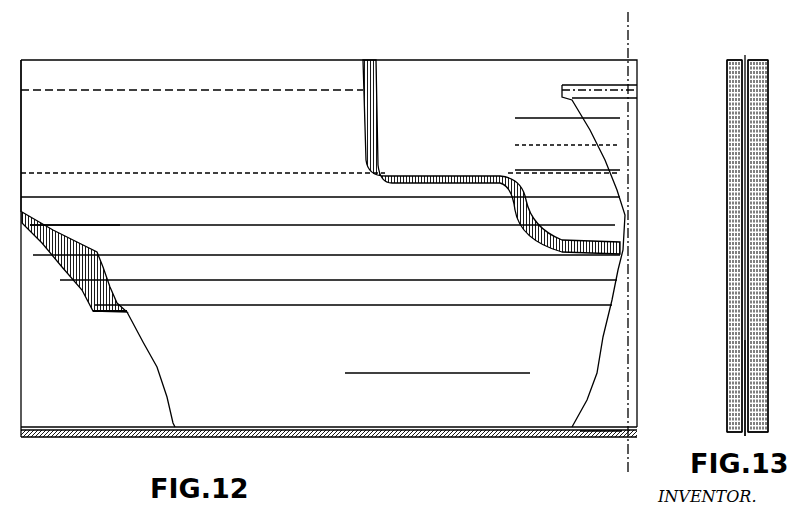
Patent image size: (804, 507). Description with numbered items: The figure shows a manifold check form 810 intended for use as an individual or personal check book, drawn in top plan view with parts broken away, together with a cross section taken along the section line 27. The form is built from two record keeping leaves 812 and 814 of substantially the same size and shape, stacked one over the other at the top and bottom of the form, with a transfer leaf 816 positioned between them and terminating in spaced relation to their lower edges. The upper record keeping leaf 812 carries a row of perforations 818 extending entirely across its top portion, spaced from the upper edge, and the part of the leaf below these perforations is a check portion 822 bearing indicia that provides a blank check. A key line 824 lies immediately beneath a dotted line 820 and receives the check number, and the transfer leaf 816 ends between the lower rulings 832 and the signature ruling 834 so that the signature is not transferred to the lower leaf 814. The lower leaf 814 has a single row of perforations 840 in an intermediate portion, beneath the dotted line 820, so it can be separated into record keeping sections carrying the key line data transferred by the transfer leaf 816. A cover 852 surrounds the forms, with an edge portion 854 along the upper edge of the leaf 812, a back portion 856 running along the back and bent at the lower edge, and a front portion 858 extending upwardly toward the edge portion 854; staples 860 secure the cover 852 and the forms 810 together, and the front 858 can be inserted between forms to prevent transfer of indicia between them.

In FIG. 12, the section line 27 is at (627, 25).
In FIG. 12, the manifold check form 810 is at (432, 447).
In FIG. 13, the manifold check form 810 is at (723, 209).
In FIG. 12, the record keeping leaf 812 is at (173, 383).
In FIG. 13, the record keeping leaf 812 is at (727, 240).
In FIG. 12, the record keeping leaf 814 is at (487, 38).
In FIG. 13, the record keeping leaf 814 is at (730, 263).
In FIG. 12, the transfer leaf 816 is at (364, 104).
In FIG. 13, the transfer leaf 816 is at (728, 293).
In FIG. 12, the row of perforations 818 is at (138, 90).
In FIG. 12, the dotted line 820 is at (36, 170).
In FIG. 12, the check portion of leaf 822 is at (397, 418).
In FIG. 12, the key line 824 is at (46, 200).
In FIG. 12, the lower rulings 832 is at (212, 280).
In FIG. 12, the ruling 834 is at (543, 388).
In FIG. 12, the row of perforations 840 is at (380, 166).
In FIG. 12, the cover 852 is at (622, 380).
In FIG. 13, the cover 852 is at (727, 415).
In FIG. 12, the edge portion of cover 854 is at (612, 65).
In FIG. 13, the edge portion of cover 854 is at (727, 75).
In FIG. 13, the back portion of cover 856 is at (742, 170).
In FIG. 12, the front portion of cover 858 is at (601, 424).
In FIG. 13, the front portion of cover 858 is at (730, 340).
In FIG. 12, the staples 860 is at (597, 71).